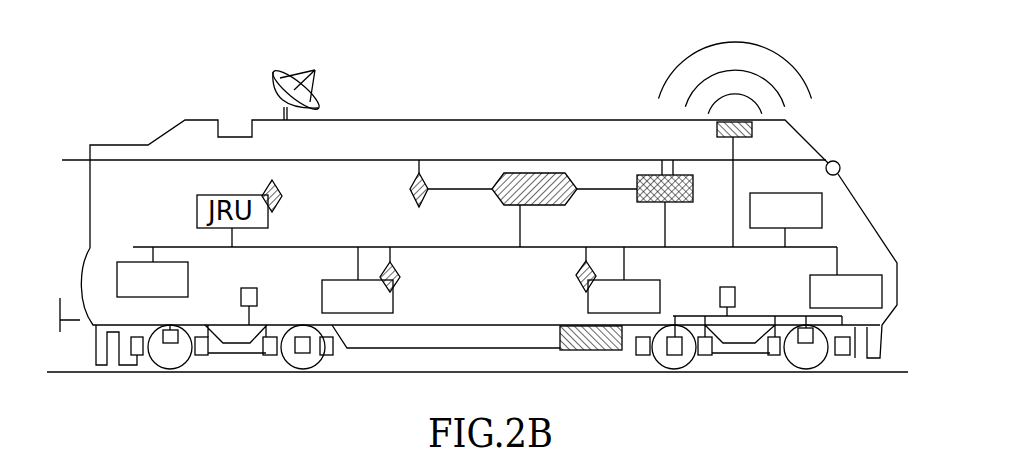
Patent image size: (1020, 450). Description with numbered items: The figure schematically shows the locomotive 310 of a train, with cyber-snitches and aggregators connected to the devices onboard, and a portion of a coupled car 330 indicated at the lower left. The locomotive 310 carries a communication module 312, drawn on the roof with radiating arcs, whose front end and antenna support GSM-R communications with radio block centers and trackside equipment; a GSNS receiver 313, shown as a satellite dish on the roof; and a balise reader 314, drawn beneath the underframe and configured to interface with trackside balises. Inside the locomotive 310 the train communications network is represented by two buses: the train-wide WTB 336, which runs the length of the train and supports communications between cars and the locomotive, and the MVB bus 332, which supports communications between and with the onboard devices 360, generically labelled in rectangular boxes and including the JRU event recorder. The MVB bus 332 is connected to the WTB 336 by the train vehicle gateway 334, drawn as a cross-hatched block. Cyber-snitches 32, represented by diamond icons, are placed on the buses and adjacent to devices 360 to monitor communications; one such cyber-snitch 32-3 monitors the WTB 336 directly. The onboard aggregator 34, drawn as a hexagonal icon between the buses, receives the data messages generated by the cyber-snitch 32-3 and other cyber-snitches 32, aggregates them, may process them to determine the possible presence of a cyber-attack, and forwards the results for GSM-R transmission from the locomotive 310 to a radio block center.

The locomotive 310 is at (364, 88).
The GSNS receiver 313 is at (273, 83).
The communication module 312 is at (738, 122).
The WTB 336 is at (200, 160).
The MVB bus 332 is at (175, 247).
The onboard cyber-snitch 32 is at (389, 262).
The cyber-snitch 32-3 is at (428, 183).
The onboard aggregator 34 is at (540, 177).
The train vehicle gateway 334 is at (662, 174).
The onboard device 360 is at (499, 253).
The balise reader 314 is at (603, 350).
The car 330 is at (459, 411).